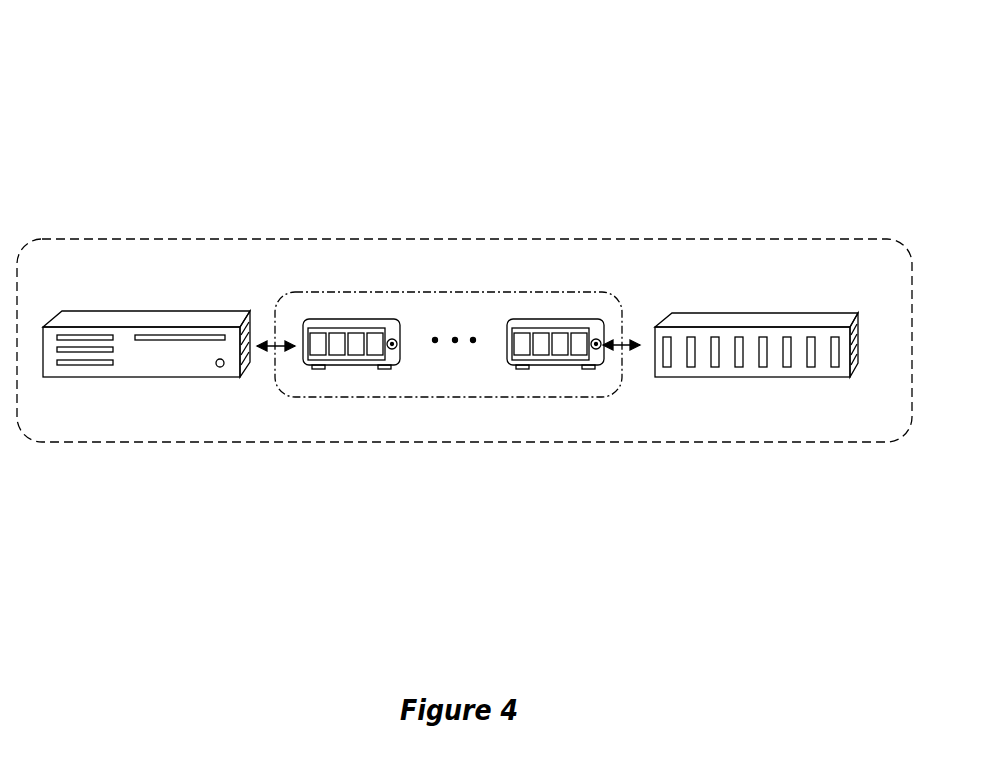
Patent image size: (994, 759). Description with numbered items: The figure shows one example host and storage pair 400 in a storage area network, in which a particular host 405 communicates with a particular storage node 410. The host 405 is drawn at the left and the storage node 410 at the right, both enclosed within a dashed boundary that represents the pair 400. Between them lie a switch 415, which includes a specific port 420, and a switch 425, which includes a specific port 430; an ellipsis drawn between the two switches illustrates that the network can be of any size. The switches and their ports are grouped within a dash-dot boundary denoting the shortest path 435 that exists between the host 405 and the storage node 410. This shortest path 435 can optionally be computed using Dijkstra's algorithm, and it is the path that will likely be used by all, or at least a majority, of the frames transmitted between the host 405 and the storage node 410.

The host and storage pair 400 is at (464, 241).
The host 405 is at (143, 230).
The storage node 410 is at (792, 230).
The switch 415 is at (308, 317).
The port 420 is at (283, 469).
The switch 425 is at (627, 317).
The port 430 is at (658, 469).
The shortest path 435 is at (448, 438).